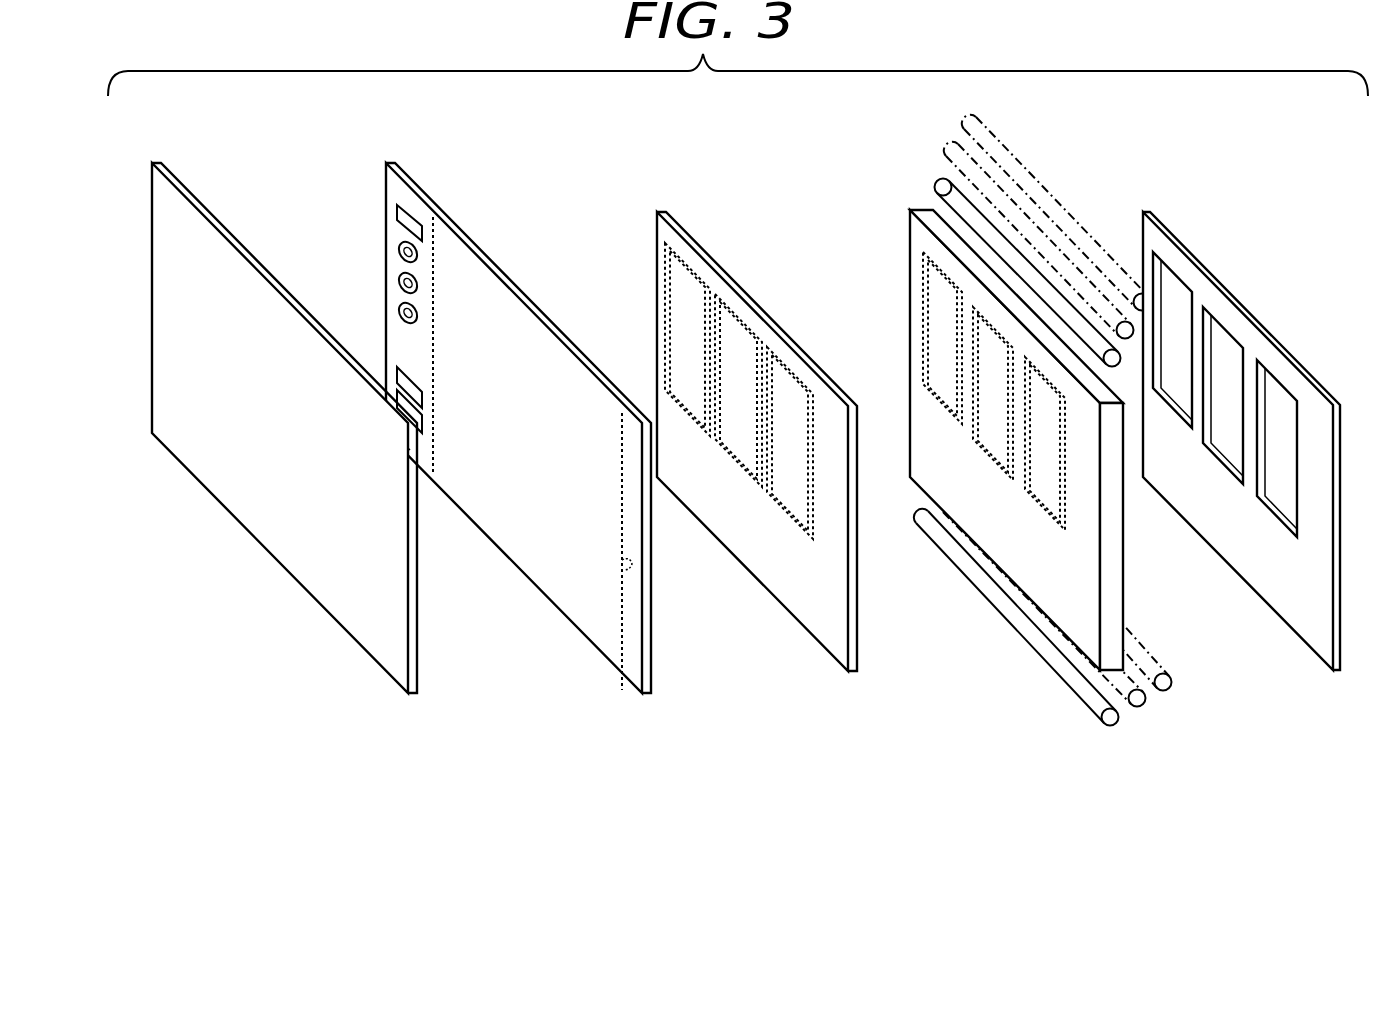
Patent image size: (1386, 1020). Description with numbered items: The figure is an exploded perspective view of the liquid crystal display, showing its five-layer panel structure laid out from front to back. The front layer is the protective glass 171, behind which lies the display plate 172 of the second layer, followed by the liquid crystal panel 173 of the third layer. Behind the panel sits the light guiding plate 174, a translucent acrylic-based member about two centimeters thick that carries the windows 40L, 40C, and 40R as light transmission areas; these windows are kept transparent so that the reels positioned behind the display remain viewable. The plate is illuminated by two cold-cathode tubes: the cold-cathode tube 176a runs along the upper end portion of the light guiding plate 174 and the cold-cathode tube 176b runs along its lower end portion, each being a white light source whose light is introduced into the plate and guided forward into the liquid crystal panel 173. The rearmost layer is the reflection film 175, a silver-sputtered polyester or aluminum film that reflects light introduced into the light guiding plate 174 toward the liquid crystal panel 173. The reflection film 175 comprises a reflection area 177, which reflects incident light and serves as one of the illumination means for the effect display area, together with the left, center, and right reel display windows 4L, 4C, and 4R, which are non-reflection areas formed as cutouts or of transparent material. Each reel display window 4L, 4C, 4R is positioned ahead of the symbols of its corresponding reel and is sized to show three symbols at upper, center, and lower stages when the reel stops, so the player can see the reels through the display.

The protective glass 171 is at (322, 572).
The display plate 172 is at (560, 575).
The liquid crystal panel 173 is at (790, 575).
The light guiding plate 174 is at (964, 471).
The reflection film 175 is at (1279, 582).
The cold-cathode tube 176a is at (935, 190).
The cold-cathode tube 176b is at (1000, 613).
The reflection area 177 is at (1244, 425).
The window 40L is at (945, 308).
The window 40C is at (997, 372).
The window 40R is at (1048, 428).
The reel display window 4L is at (1172, 283).
The reel display window 4C is at (1226, 345).
The reel display window 4R is at (1275, 395).